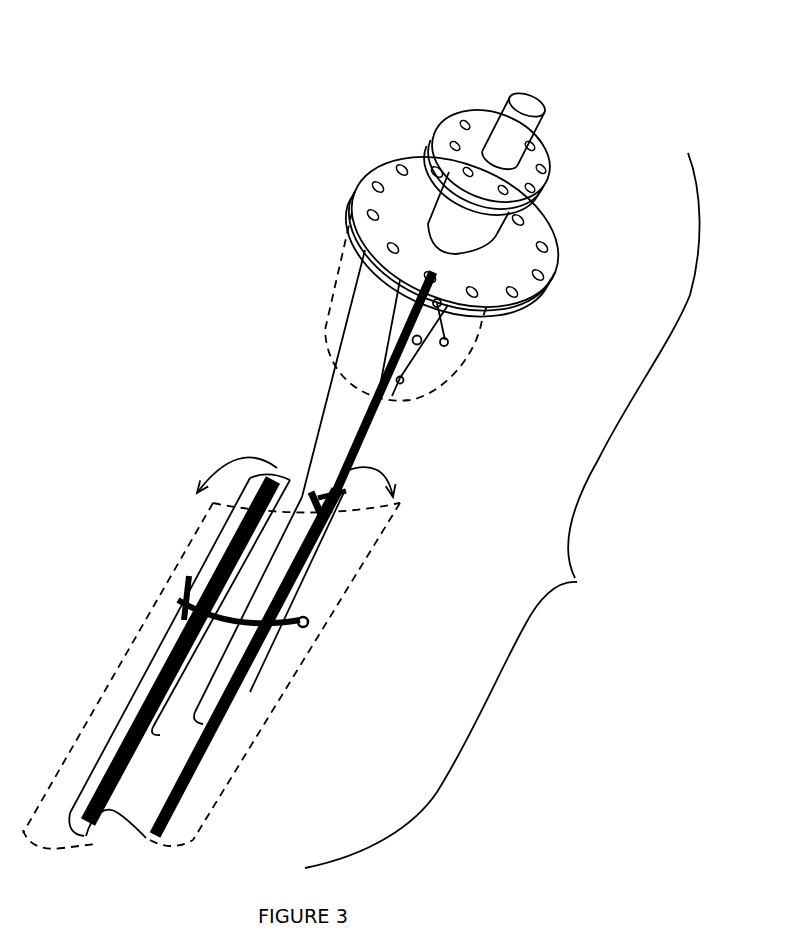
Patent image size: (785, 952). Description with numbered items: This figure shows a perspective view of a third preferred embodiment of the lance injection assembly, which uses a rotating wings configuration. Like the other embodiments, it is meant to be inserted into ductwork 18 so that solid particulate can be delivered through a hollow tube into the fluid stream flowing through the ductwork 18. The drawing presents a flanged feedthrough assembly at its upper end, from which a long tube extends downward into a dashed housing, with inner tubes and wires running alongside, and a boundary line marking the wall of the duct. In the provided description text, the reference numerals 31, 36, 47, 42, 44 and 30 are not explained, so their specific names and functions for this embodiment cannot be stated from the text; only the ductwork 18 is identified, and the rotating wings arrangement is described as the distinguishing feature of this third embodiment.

The ductwork 18 is at (340, 297).
The pipe connection 31 is at (507, 110).
The tube 36 is at (295, 451).
The wires 47 is at (360, 424).
The inner tubes 42 is at (83, 773).
The outer housing 44 is at (260, 737).
The vessel wall boundary 30 is at (502, 510).